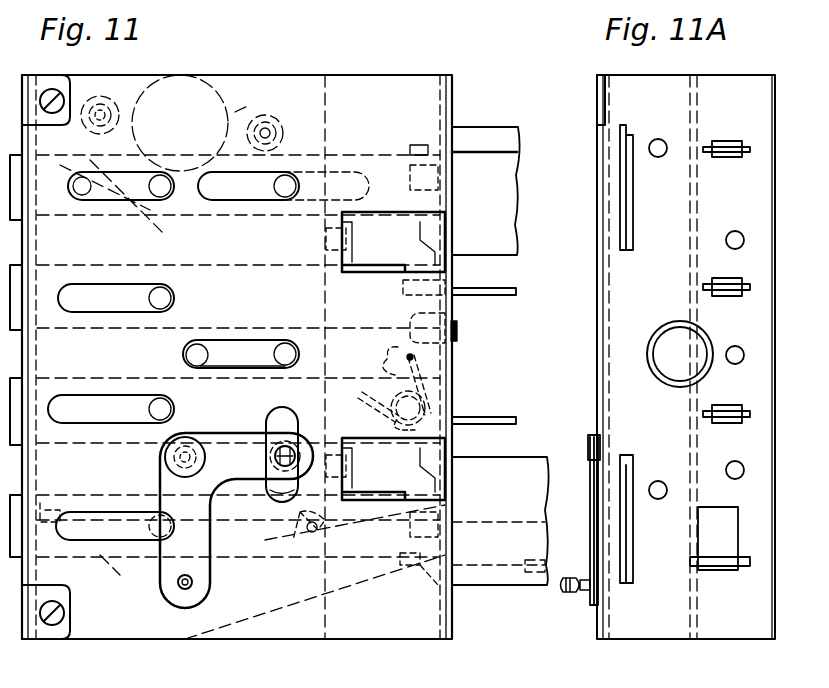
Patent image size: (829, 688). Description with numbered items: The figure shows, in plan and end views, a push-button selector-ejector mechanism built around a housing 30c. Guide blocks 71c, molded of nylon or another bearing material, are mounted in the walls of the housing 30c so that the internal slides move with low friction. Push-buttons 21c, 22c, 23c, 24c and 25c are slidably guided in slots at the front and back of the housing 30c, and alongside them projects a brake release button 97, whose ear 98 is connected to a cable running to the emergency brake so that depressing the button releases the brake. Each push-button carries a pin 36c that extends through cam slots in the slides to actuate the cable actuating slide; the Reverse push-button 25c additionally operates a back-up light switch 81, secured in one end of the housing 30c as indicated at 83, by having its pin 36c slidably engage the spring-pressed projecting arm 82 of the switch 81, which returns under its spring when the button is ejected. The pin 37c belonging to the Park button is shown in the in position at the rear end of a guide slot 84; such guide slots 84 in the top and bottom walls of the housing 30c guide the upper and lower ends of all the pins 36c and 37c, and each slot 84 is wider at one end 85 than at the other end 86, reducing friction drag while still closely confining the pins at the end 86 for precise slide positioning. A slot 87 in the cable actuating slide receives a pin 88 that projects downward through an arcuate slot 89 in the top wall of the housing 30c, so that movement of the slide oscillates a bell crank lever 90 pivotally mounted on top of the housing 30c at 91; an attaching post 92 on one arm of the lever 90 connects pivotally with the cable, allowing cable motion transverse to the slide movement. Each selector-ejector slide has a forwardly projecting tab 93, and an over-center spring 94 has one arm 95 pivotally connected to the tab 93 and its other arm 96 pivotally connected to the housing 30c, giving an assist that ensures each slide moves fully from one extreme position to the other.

In FIG. 11, the housing 30c is at (398, 633).
In FIG. 11A, the housing 30c is at (633, 636).
In FIG. 11, the back-up light switch 81 is at (207, 78).
In FIG. 11, the projecting arm 82 is at (85, 132).
In FIG. 11, the switch mounting 83 is at (280, 120).
In FIG. 11, the pin 36c is at (265, 200).
In FIG. 11, the pin 37c is at (215, 352).
In FIG. 11, the narrow end of slot 86 is at (195, 345).
In FIG. 11, the wide end of slot 85 is at (290, 340).
In FIG. 11, the guide slot 84 is at (244, 372).
In FIG. 11, the guide block 71c is at (410, 170).
In FIG. 11, the push-button 22c is at (513, 250).
In FIG. 11A, the push-button 22c is at (626, 210).
In FIG. 11, the push-button 24c is at (512, 293).
In FIG. 11A, the push-button 24c is at (720, 296).
In FIG. 11, the push-button 23c is at (493, 418).
In FIG. 11A, the push-button 23c is at (718, 423).
In FIG. 11, the push-button 21c is at (480, 462).
In FIG. 11A, the push-button 21c is at (636, 476).
In FIG. 11A, the Reverse push-button 25c is at (720, 145).
In FIG. 11, the brake release button 97 is at (490, 522).
In FIG. 11A, the brake release button 97 is at (713, 565).
In FIG. 11, the other arm of over-center spring 96 is at (445, 352).
In FIG. 11, the tab 93 is at (340, 375).
In FIG. 11, the one arm of over-center spring 95 is at (400, 405).
In FIG. 11, the over-center spring 94 is at (395, 426).
In FIG. 11, the arcuate slot 89 is at (280, 418).
In FIG. 11, the pin 88 is at (292, 484).
In FIG. 11, the slot 87 is at (270, 457).
In FIG. 11, the bell crank lever 90 is at (248, 490).
In FIG. 11A, the bell crank lever 90 is at (592, 517).
In FIG. 11, the pivot 91 is at (163, 458).
In FIG. 11A, the pivot 91 is at (585, 448).
In FIG. 11, the attaching post 92 is at (192, 588).
In FIG. 11A, the attaching post 92 is at (580, 592).
In FIG. 11, the ear 98 is at (322, 525).